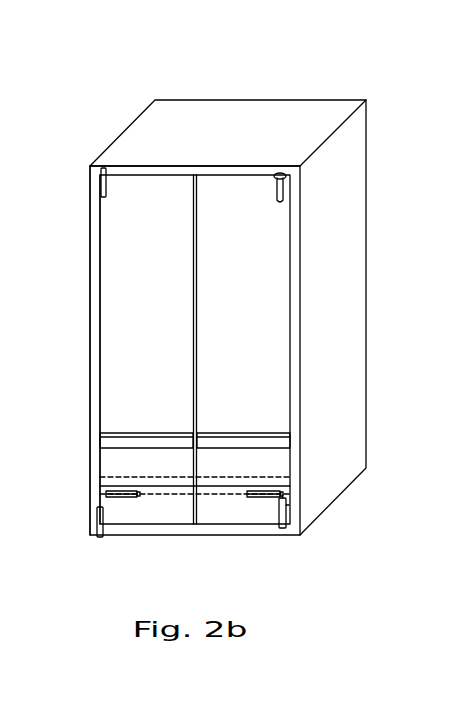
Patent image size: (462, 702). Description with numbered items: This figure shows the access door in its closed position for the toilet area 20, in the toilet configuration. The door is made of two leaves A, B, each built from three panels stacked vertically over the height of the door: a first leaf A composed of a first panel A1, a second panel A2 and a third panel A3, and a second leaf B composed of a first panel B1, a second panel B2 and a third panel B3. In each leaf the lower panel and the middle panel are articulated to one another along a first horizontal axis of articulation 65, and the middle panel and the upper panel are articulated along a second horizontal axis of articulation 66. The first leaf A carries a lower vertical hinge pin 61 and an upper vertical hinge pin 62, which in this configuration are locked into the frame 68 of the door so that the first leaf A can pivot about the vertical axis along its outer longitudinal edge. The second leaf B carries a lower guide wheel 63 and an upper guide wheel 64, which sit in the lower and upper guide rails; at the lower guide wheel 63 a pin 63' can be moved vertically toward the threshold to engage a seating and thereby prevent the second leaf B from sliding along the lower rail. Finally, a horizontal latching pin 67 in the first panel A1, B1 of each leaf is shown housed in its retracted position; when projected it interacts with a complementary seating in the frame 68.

The toilet area 20 is at (270, 127).
The lower vertical hinge pin 61 is at (97, 524).
The upper vertical hinge pin 62 is at (100, 178).
The lower guide wheel 63 is at (297, 544).
The pin 63' is at (333, 529).
The upper guide wheel 64 is at (288, 182).
The first horizontal axis of articulation 65 is at (103, 487).
The second horizontal axis of articulation 66 is at (100, 432).
The horizontal latching pin 67 is at (120, 497).
The frame 68 is at (91, 303).
The first leaf A is at (147, 185).
The second leaf B is at (223, 185).
The first panel A1 is at (153, 507).
The first panel B1 is at (225, 507).
The second panel A2 is at (110, 460).
The second panel B2 is at (277, 462).
The third panel A3 is at (168, 318).
The third panel B3 is at (225, 318).